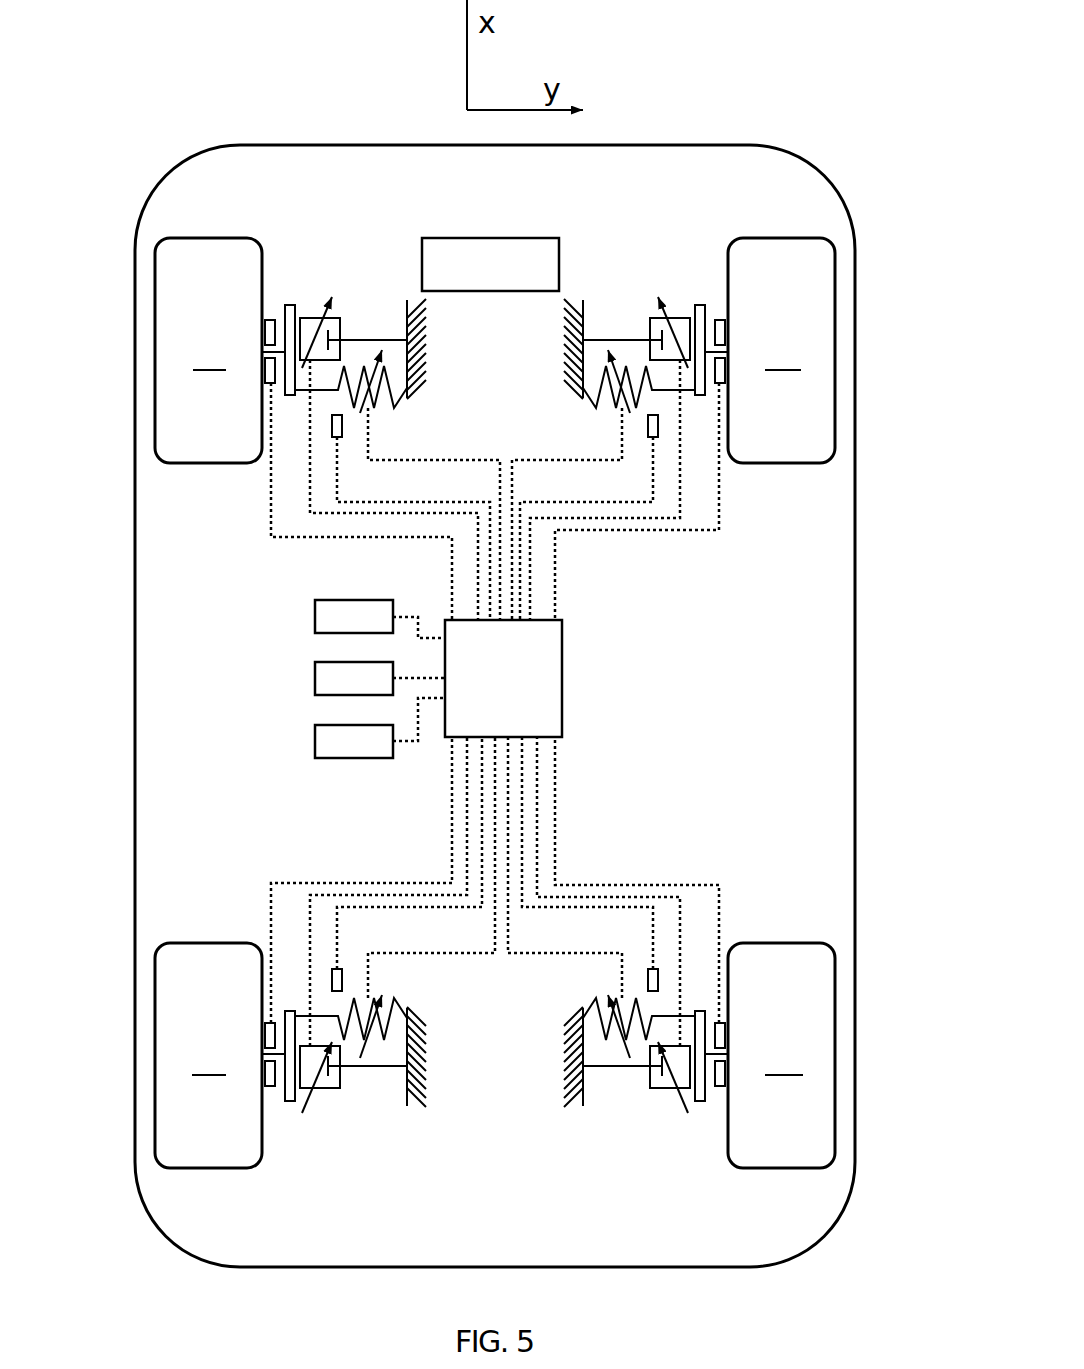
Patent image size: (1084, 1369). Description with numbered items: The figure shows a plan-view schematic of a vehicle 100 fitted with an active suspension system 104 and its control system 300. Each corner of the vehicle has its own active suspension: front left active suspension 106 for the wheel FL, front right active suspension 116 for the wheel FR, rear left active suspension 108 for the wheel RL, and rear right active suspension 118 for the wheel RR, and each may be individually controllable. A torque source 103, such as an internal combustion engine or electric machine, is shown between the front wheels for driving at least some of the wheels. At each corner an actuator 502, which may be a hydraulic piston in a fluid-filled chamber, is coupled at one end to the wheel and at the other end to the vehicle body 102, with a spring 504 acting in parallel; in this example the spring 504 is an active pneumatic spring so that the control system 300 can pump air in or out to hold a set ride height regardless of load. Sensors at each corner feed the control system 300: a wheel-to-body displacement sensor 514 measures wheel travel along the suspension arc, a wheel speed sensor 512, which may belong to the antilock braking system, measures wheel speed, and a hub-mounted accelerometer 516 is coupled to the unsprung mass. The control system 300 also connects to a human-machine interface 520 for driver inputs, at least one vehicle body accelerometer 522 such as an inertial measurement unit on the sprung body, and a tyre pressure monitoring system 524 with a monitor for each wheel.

The vehicle 100 is at (795, 160).
The vehicle body 102 is at (420, 357).
The torque source 103 is at (492, 238).
The active suspension system 104 is at (285, 112).
The front left active suspension 106 is at (338, 215).
The front right active suspension 116 is at (650, 215).
The rear left active suspension 108 is at (260, 908).
The rear right active suspension 118 is at (732, 912).
The control system 300 is at (560, 620).
The actuator 502 is at (308, 316).
The spring 504 is at (384, 400).
The wheel speed sensor 512 is at (272, 318).
The wheel-to-body displacement sensor 514 is at (336, 438).
The hub-mounted accelerometer 516 is at (265, 358).
The human-machine interface 520 is at (376, 629).
The vehicle body accelerometer 522 is at (376, 691).
The tyre pressure monitoring system 524 is at (376, 754).